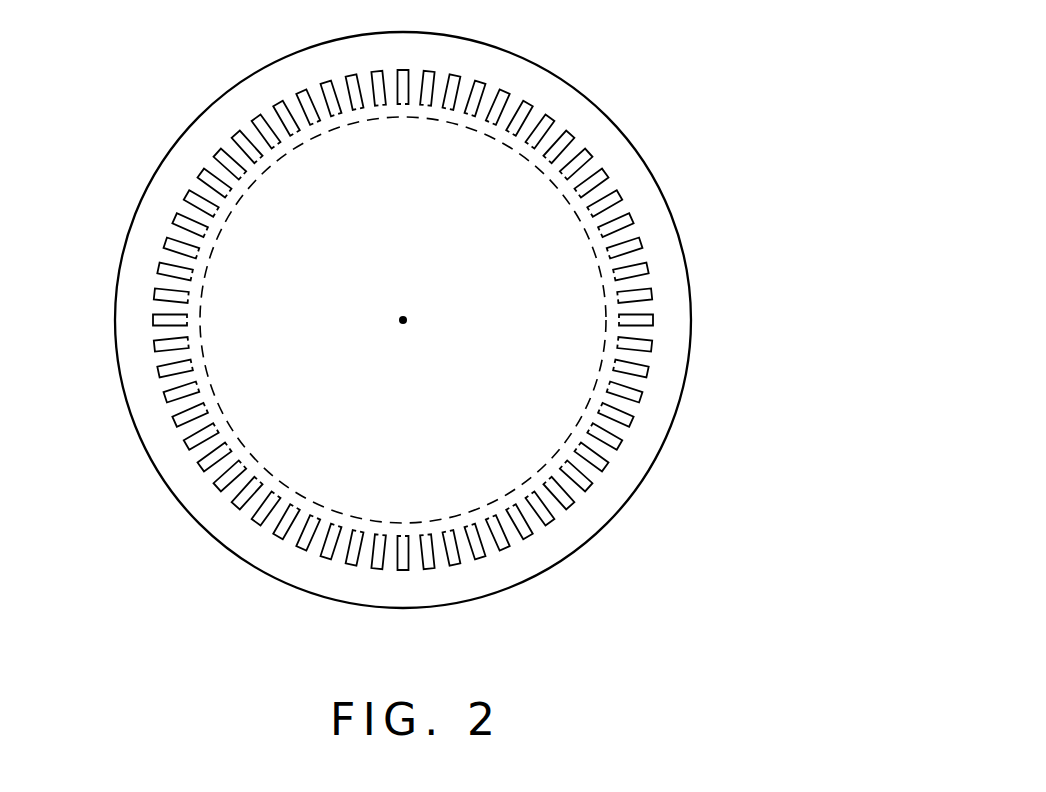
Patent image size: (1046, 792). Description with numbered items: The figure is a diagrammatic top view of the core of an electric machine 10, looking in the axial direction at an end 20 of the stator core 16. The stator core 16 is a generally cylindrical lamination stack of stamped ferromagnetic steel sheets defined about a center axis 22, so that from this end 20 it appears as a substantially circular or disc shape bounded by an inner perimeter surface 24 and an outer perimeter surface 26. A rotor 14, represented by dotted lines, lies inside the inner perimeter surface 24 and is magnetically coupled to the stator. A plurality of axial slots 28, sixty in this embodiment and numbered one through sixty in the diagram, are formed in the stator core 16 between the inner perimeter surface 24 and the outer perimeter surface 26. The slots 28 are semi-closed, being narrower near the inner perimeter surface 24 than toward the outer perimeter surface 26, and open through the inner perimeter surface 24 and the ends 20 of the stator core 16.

The electric machine 10 is at (605, 80).
The rotor 14 is at (587, 198).
The stator core 16 is at (207, 127).
The end 20 is at (147, 417).
The center axis 22 is at (406, 318).
The inner perimeter surface 24 is at (350, 528).
The outer perimeter surface 26 is at (612, 512).
The axial slots 28 is at (628, 242).